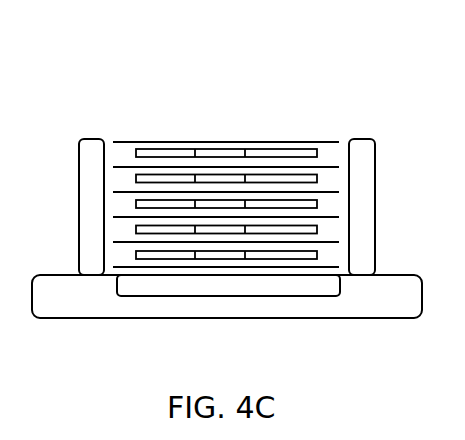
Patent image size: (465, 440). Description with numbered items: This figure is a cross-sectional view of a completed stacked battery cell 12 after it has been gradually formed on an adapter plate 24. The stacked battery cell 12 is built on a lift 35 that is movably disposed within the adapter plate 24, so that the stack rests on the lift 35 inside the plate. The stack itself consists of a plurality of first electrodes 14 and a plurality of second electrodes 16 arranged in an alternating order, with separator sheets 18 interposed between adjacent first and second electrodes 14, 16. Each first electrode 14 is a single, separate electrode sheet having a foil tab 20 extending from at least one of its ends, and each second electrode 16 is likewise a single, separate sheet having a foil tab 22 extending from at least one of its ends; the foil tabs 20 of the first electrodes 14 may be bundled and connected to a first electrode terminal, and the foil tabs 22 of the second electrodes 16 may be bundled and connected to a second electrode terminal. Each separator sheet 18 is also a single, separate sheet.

The stacked battery cell 12 is at (264, 146).
The first electrode 14 is at (292, 150).
The second electrode 16 is at (313, 180).
The separator sheet 18 is at (126, 140).
The foil tab 20 is at (200, 150).
The foil tab 22 is at (236, 177).
The adapter plate 24 is at (71, 327).
The lift 35 is at (310, 299).